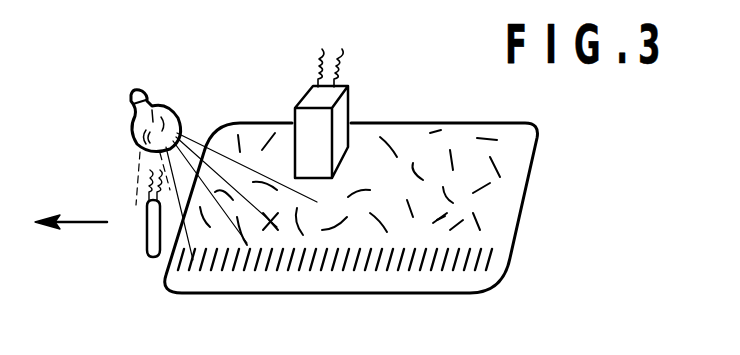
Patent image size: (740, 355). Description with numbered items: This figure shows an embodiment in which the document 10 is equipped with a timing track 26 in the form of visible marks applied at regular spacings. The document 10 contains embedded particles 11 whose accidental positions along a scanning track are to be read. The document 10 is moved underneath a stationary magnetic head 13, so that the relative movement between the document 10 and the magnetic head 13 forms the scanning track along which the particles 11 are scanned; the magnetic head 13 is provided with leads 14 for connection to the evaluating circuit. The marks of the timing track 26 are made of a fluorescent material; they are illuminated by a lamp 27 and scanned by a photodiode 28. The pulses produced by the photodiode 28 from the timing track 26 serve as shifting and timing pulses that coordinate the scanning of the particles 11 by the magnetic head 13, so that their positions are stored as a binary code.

The document 10 is at (518, 183).
The embedded particles 11 is at (483, 137).
The magnetic head 13 is at (342, 115).
The leads 14 is at (345, 56).
The timing track 26 is at (417, 267).
The lamp 27 is at (155, 108).
The photodiode 28 is at (153, 257).